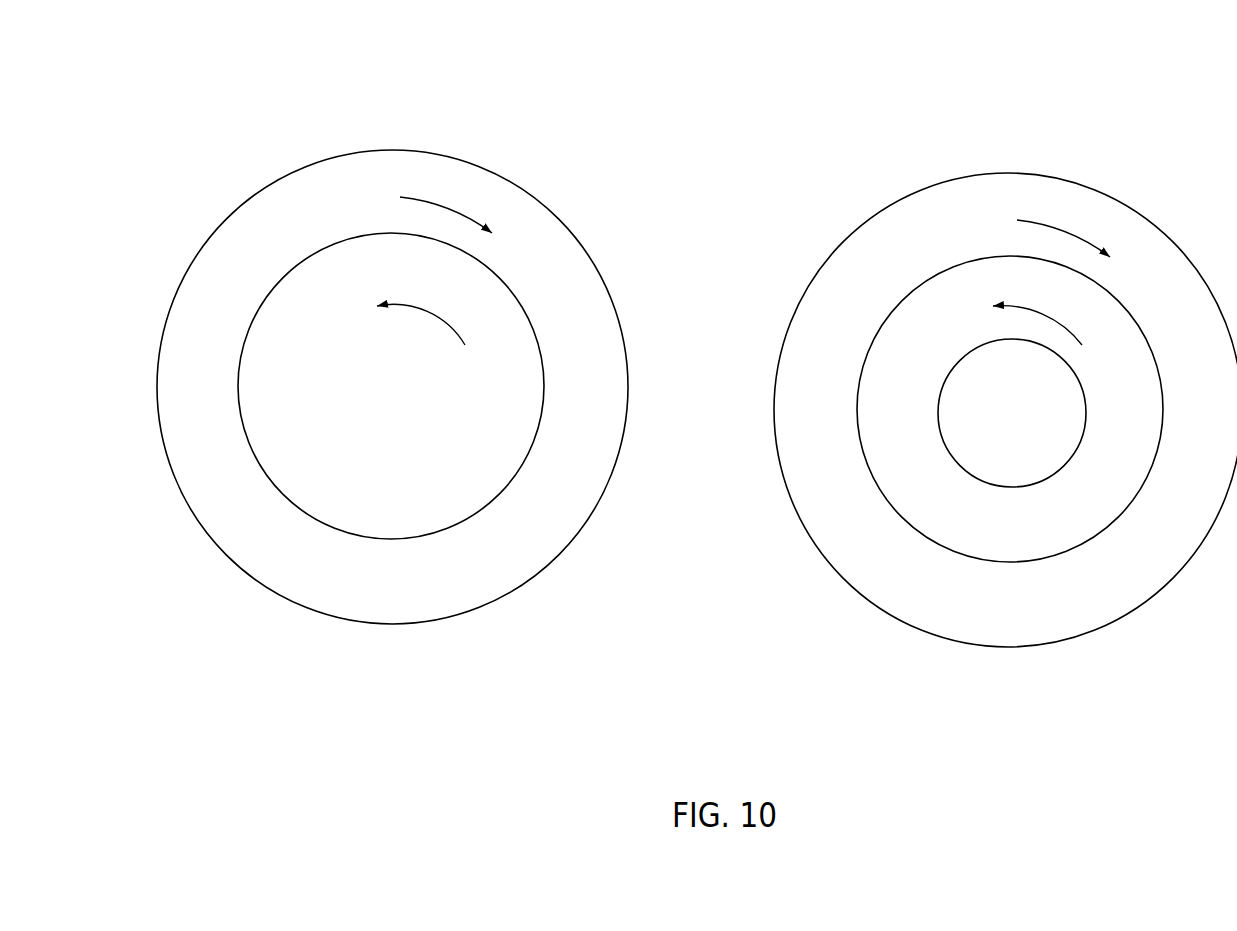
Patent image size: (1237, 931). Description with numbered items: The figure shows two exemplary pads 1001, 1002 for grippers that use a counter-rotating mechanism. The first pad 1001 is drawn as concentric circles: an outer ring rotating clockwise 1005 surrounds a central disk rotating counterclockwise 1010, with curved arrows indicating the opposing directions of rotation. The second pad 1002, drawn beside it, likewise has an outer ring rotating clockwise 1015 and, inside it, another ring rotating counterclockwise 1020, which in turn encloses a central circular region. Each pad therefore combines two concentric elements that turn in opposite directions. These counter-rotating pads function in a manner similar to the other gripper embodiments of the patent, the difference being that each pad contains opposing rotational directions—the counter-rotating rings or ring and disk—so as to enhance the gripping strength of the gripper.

The pad 1001 is at (507, 97).
The pad 1002 is at (882, 72).
The ring rotating clockwise 1005 is at (347, 182).
The disk rotating counterclockwise 1010 is at (347, 447).
The ring rotating clockwise 1015 is at (988, 207).
The ring rotating counterclockwise 1020 is at (917, 500).